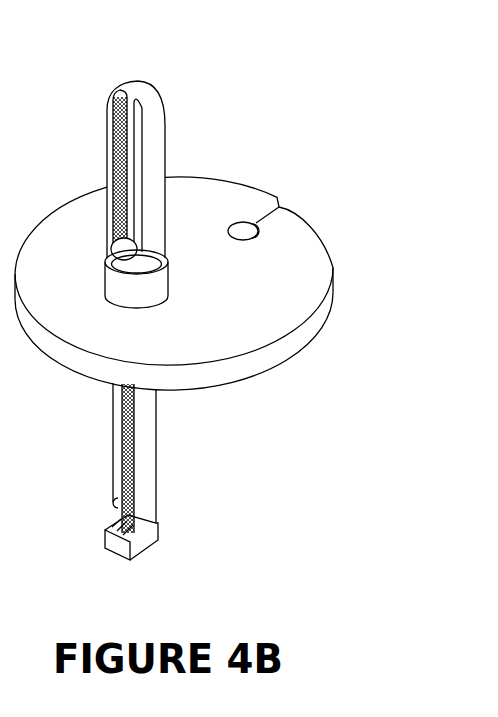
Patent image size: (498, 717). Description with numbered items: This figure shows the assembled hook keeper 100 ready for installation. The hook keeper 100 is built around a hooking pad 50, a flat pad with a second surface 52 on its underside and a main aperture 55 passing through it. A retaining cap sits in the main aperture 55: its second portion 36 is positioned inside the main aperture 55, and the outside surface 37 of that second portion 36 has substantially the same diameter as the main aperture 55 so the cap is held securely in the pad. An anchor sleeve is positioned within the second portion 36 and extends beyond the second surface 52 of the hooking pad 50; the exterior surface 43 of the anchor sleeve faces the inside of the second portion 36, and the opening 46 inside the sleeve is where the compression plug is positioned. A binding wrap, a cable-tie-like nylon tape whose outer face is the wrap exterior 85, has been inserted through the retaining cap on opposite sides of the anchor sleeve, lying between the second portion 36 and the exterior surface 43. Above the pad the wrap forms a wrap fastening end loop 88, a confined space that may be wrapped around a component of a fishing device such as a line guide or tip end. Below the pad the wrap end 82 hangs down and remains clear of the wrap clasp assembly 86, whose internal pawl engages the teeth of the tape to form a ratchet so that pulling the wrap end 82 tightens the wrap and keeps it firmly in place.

The hook keeper 100 is at (213, 446).
The wrap fastening end loop 88 is at (152, 70).
The hooking pad 50 is at (205, 192).
The second surface 52 is at (293, 230).
The wrap exterior 85 is at (152, 249).
The opening 46 is at (120, 254).
The exterior surface 43 is at (120, 274).
The second portion 36 is at (158, 276).
The outside surface 37 is at (133, 295).
The main aperture 55 is at (133, 310).
The wrap end 82 is at (113, 503).
The wrap clasp assembly 86 is at (118, 543).